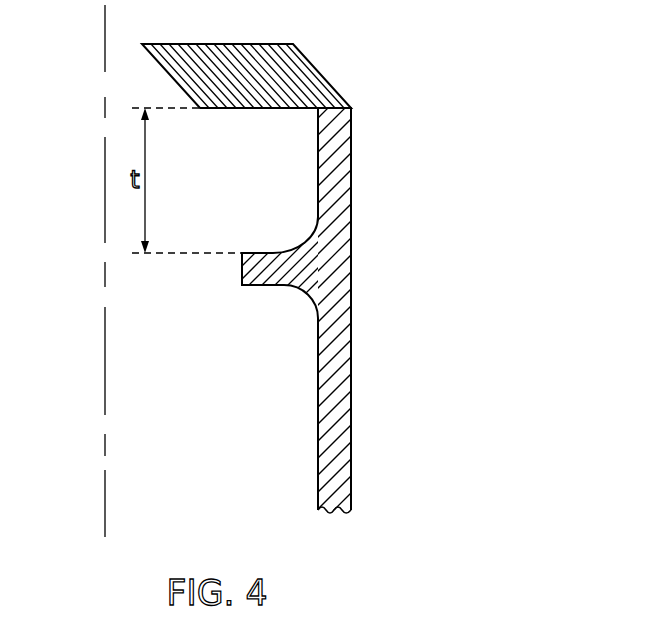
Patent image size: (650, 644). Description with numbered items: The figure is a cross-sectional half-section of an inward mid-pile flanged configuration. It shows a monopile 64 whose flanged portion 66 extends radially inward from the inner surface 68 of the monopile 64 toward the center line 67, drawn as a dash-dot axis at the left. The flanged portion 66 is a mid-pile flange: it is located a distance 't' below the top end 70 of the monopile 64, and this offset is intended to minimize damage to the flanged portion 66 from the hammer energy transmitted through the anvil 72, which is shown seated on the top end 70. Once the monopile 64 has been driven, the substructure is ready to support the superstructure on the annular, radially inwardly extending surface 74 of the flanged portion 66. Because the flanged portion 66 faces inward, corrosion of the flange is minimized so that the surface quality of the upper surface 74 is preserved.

The monopile 64 is at (352, 408).
The flanged portion 66 is at (243, 277).
The center line 67 is at (105, 137).
The inner surface 68 is at (318, 190).
The top end 70 is at (359, 103).
The anvil 72 is at (302, 80).
The radially inwardly extending surface 74 is at (272, 252).